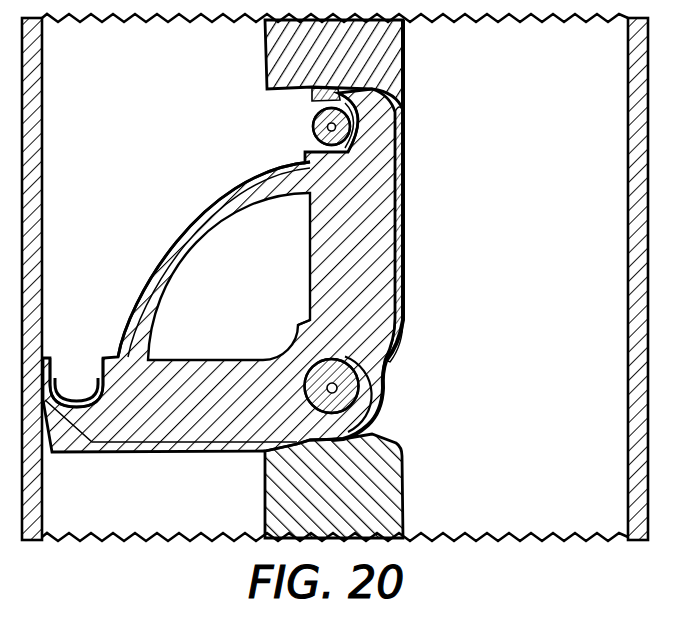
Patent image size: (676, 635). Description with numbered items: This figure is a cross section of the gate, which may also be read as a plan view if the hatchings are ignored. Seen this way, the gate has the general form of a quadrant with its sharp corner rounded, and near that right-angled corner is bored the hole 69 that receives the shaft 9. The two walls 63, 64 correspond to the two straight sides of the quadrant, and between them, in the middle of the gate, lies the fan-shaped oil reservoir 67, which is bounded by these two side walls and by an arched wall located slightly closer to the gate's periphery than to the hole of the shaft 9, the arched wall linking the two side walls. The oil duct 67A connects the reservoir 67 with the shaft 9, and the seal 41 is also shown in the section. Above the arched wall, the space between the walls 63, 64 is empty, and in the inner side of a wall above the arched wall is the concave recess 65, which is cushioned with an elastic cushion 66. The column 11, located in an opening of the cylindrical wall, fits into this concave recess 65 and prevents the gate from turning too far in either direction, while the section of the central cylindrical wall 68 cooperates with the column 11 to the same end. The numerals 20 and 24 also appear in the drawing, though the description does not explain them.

The shaft 9 is at (343, 397).
The column 11 is at (313, 113).
The socket 20 is at (383, 385).
The pin 24 is at (328, 128).
The seal 41 is at (212, 443).
The wall 63 is at (407, 317).
The wall 64 is at (120, 456).
The concave recess 65 is at (57, 372).
The elastic cushion 66 is at (90, 380).
The oil reservoir 67 is at (229, 276).
The oil duct 67A is at (315, 362).
The central cylindrical wall section 68 is at (372, 481).
The hole for the shaft 69 is at (382, 420).